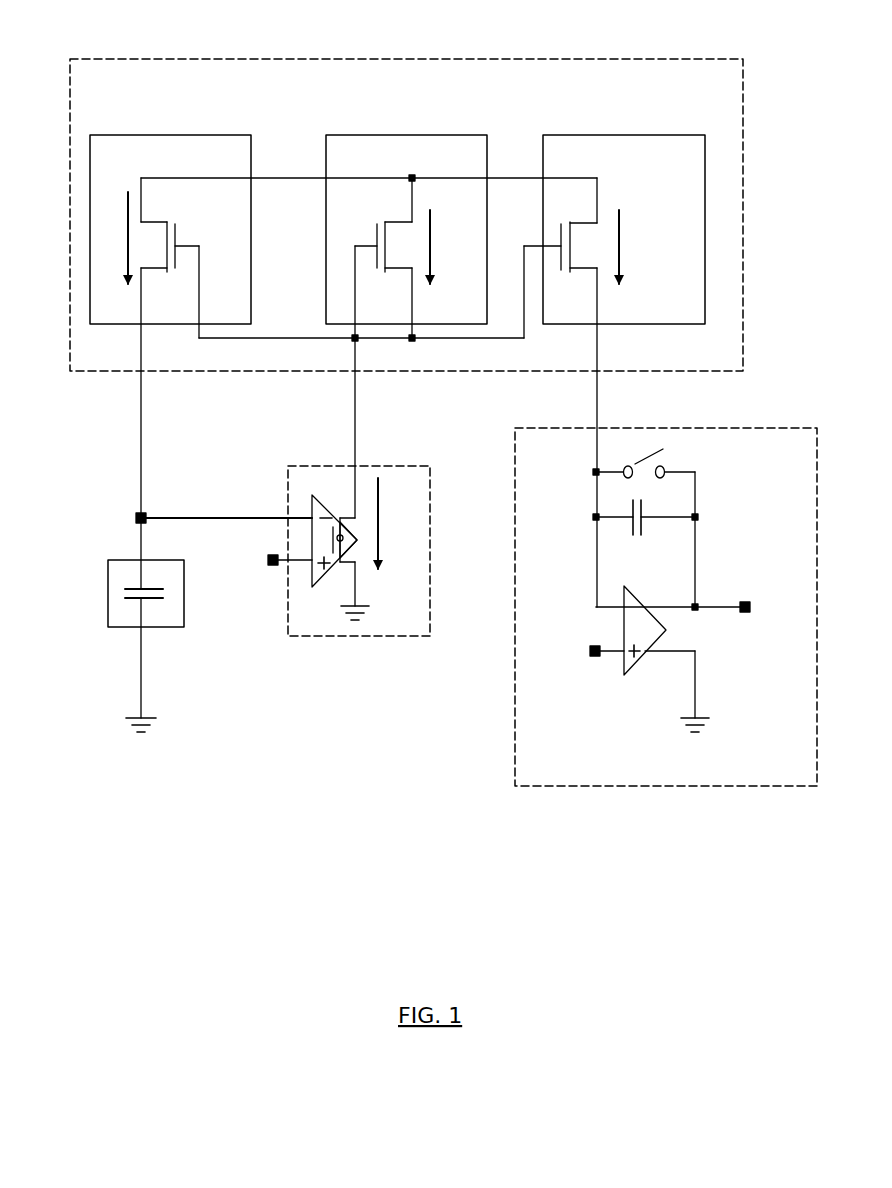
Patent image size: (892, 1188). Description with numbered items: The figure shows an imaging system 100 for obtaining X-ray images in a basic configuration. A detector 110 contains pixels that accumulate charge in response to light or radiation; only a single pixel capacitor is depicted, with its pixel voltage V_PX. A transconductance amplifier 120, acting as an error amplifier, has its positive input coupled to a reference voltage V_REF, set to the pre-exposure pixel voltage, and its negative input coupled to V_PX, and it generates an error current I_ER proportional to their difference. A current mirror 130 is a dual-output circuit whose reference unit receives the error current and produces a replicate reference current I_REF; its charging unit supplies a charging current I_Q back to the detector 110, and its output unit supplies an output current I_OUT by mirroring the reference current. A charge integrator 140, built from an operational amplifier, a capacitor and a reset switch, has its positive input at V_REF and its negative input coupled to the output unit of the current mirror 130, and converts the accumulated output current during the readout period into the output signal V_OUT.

The imaging system 100 is at (422, 427).
The detector 110 is at (106, 590).
The transconductance amplifier 120 is at (363, 637).
The current mirror 130 is at (565, 57).
The charge integrator 140 is at (685, 788).